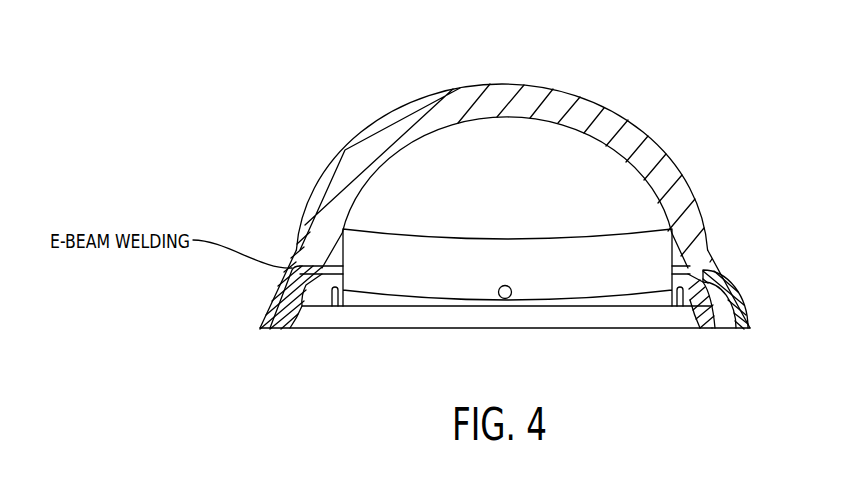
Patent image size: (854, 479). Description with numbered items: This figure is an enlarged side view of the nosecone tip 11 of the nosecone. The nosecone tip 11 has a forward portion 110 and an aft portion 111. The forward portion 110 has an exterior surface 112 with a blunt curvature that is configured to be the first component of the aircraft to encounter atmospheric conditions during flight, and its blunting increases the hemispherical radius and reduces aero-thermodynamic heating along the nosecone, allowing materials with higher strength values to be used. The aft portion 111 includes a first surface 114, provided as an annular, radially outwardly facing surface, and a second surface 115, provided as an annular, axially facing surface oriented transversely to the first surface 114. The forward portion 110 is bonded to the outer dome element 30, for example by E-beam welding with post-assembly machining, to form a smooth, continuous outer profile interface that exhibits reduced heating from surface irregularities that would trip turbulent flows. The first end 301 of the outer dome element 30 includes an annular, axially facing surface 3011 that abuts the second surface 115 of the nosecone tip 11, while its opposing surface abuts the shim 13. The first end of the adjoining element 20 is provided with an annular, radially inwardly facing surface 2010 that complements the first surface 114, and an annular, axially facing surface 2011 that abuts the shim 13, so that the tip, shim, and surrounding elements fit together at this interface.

The nosecone tip 11 is at (645, 152).
The forward portion 110 is at (516, 81).
The exterior surface 112 is at (324, 192).
The second surface 115 is at (695, 262).
The aft portion 111 is at (322, 270).
The annular, axially facing surface 3011 is at (697, 267).
The outer dome element 30 is at (256, 280).
The first end 301 is at (284, 298).
The shim 13 is at (712, 270).
The first surface 114 is at (697, 316).
The annular, radially inwardly facing surface 2010 is at (728, 322).
The base 20 is at (476, 360).
The annular, axially facing surface 2011 is at (303, 309).